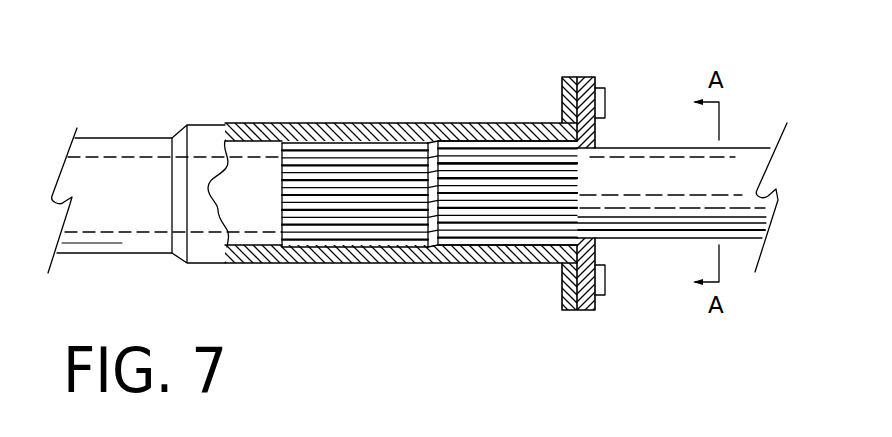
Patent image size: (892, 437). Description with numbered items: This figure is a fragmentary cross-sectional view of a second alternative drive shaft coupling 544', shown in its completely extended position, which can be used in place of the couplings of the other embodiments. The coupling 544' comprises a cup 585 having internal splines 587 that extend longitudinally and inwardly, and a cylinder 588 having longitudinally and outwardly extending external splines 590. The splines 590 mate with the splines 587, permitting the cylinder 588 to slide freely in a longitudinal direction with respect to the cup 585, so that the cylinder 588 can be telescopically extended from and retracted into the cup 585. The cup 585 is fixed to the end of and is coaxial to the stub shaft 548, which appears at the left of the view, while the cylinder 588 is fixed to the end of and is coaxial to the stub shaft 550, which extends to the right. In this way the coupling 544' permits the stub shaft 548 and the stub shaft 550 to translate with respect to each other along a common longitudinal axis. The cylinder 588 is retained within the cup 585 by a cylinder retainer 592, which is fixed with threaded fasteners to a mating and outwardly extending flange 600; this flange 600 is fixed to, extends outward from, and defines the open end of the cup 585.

The stub shaft 548 is at (151, 128).
The cup 585 is at (282, 125).
The internal splines 587 is at (363, 188).
The cylinder 588 is at (527, 172).
The external splines 590 is at (467, 185).
The coupling 544' is at (406, 178).
The stub shaft 550 is at (653, 148).
The flange 600 is at (562, 287).
The cylinder retainer 592 is at (682, 219).